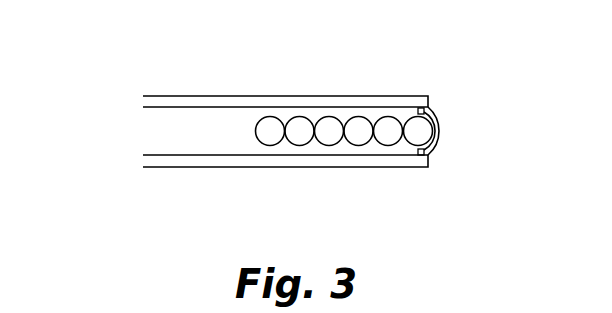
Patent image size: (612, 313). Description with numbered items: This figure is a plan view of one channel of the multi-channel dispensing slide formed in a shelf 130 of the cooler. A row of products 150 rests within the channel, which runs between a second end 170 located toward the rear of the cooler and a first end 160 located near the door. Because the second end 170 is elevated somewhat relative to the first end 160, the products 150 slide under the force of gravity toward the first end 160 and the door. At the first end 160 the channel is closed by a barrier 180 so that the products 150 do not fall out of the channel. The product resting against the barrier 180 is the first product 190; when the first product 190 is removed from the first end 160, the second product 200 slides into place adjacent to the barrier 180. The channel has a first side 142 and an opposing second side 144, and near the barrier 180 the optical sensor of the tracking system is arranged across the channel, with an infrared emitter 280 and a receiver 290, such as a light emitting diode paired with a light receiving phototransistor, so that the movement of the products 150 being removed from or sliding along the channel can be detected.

The shelf 130 is at (226, 65).
The second end 170 is at (137, 128).
The products 150 is at (240, 222).
The second product 200 is at (360, 146).
The first product 190 is at (406, 146).
The second side 144 is at (417, 109).
The first side 142 is at (406, 174).
The infrared emitter 280 is at (421, 156).
The receiver 290 is at (425, 108).
The barrier 180 is at (433, 119).
The first end 160 is at (449, 147).